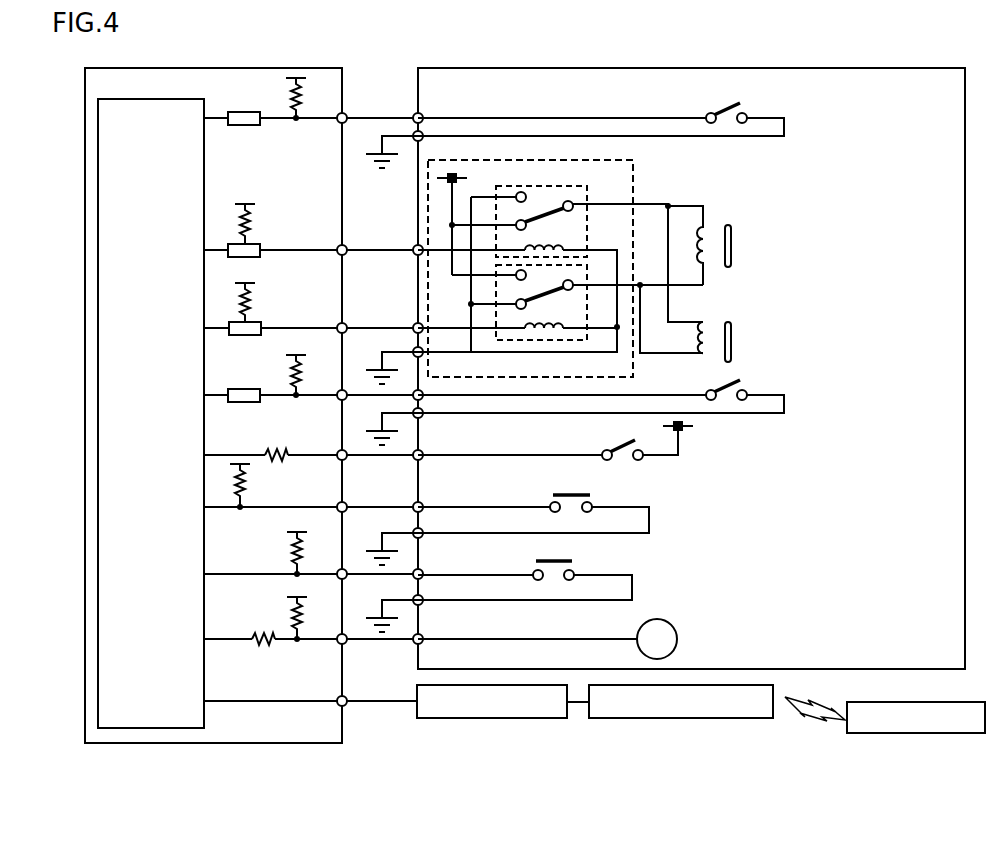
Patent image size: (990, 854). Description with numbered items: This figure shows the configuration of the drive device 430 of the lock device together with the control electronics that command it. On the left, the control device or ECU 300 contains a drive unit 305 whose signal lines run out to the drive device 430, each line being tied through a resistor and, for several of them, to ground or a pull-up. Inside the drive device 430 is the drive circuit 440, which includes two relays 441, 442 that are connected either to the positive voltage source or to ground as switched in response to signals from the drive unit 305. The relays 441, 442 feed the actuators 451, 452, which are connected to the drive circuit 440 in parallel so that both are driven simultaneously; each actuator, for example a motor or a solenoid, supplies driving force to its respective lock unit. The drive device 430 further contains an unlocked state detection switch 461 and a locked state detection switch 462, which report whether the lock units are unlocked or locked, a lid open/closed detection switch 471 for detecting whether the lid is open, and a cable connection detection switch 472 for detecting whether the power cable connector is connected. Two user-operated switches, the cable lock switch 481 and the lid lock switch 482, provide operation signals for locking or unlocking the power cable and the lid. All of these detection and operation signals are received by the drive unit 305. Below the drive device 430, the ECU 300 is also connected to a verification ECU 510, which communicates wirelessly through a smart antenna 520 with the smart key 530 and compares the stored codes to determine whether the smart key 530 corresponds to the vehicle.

The control device (ECU) 300 is at (215, 67).
The drive unit 305 is at (158, 99).
The drive device 430 is at (793, 67).
The drive circuit 440 is at (633, 164).
The relay 441 is at (576, 187).
The relay 442 is at (576, 341).
The actuator 451 is at (719, 222).
The actuator 452 is at (718, 320).
The unlocked state detection switch 461 is at (747, 108).
The locked state detection switch 462 is at (748, 390).
The lid open/closed detection switch 471 is at (640, 462).
The cable connection detection switch 472 is at (676, 627).
The cable lock switch 481 is at (593, 503).
The lid lock switch 482 is at (575, 572).
The verification ECU 510 is at (481, 718).
The smart antenna 520 is at (680, 718).
The smart key 530 is at (925, 701).